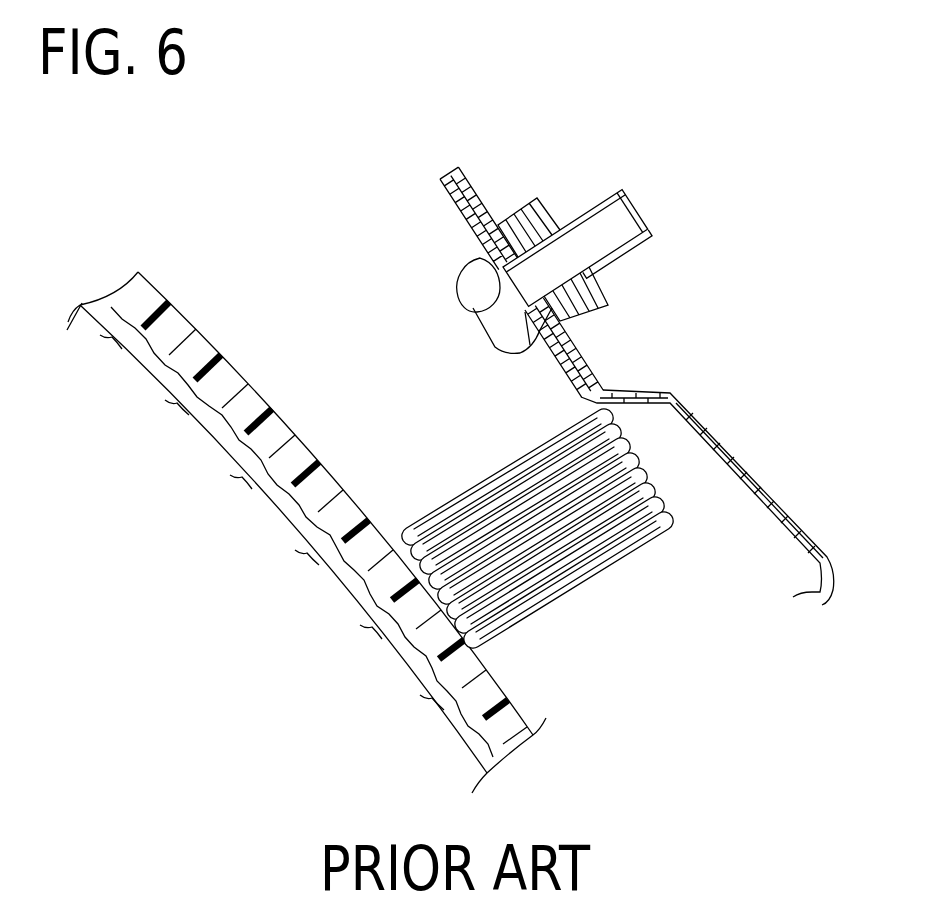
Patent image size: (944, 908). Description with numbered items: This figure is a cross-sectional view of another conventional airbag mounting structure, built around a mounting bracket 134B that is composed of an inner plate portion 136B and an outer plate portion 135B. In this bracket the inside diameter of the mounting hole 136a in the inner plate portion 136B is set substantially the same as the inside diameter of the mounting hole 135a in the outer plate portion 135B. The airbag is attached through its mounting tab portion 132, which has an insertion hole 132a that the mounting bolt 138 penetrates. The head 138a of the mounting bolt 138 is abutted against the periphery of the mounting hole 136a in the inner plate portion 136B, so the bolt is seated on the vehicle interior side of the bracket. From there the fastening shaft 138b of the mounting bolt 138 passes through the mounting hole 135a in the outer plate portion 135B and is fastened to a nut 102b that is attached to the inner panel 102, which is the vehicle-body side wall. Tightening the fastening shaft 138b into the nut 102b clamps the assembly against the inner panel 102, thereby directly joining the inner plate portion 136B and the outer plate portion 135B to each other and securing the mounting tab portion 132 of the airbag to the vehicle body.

The inner panel 102 is at (745, 468).
The nut 102b is at (617, 303).
The mounting tab portion 132 is at (495, 176).
The insertion hole 132a is at (550, 368).
The mounting bracket 134B is at (558, 176).
The outer plate portion 135B is at (426, 166).
The inner plate portion 136B is at (455, 172).
The mounting hole 135a is at (472, 328).
The mounting hole 136a is at (477, 312).
The mounting bolt 138 is at (650, 206).
The head 138a is at (507, 352).
The fastening shaft 138b is at (645, 244).